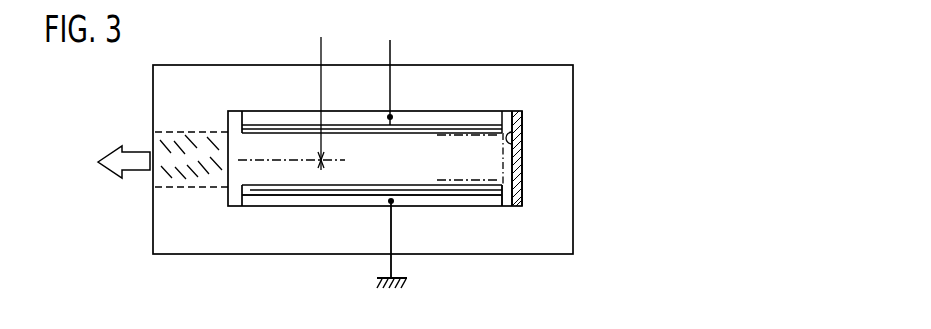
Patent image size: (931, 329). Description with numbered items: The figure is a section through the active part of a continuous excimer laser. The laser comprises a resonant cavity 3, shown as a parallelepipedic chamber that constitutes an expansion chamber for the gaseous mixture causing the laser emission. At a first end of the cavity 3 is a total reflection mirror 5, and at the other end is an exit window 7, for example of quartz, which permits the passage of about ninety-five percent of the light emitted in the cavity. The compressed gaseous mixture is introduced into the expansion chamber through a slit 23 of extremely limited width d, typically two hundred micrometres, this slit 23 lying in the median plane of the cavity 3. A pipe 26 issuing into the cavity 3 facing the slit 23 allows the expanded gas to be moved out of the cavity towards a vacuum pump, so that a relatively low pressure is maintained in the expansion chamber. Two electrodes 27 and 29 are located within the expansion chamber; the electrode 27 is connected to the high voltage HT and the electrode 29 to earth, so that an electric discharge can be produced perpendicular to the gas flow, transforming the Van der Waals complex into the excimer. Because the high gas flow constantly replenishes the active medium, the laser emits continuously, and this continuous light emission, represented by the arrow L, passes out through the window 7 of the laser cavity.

The resonant cavity 3 is at (413, 146).
The total reflection mirror 5 is at (515, 135).
The exit window 7 is at (172, 145).
The slit 23 is at (270, 160).
The pipe 26 is at (481, 186).
The electrode 27 is at (495, 112).
The electrode 29 is at (493, 197).
The slit width d is at (318, 90).
The high voltage HT is at (389, 69).
The continuous light emission L is at (123, 175).